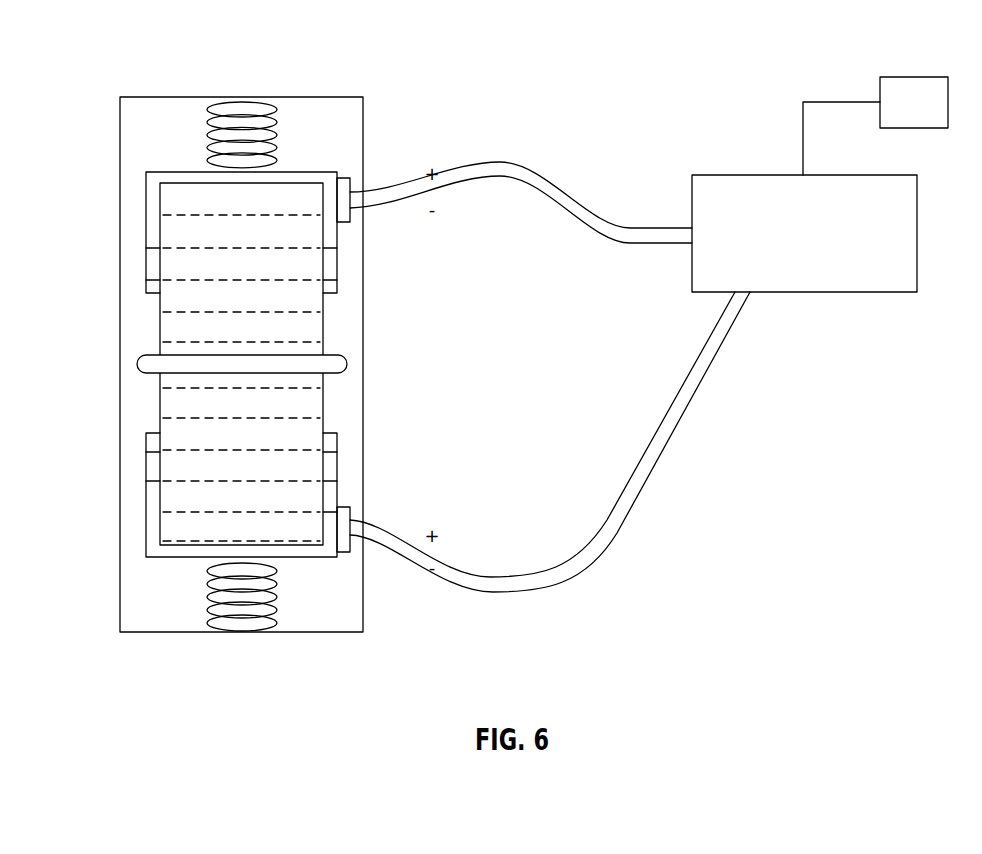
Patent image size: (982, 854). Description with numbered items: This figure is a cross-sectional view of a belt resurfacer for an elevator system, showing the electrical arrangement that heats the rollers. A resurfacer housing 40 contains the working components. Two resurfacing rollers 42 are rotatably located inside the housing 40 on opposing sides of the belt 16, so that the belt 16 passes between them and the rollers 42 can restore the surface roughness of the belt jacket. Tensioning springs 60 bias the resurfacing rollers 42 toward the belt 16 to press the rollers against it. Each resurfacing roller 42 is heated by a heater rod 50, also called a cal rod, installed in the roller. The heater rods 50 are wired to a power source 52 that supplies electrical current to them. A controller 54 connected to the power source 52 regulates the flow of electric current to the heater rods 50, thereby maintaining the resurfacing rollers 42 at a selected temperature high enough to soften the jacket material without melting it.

The belt 16 is at (137, 363).
The resurfacer housing 40 is at (165, 97).
The resurfacing roller 42 is at (323, 330).
The heater rod 50 is at (330, 197).
The power source 52 is at (738, 174).
The controller 54 is at (913, 77).
The tensioning spring 60 is at (245, 105).